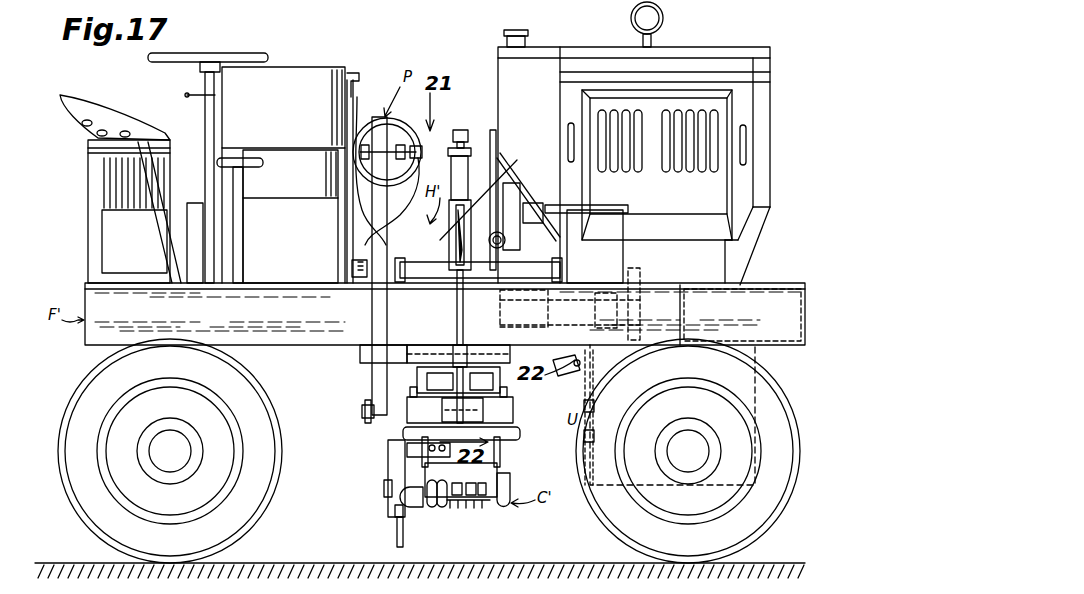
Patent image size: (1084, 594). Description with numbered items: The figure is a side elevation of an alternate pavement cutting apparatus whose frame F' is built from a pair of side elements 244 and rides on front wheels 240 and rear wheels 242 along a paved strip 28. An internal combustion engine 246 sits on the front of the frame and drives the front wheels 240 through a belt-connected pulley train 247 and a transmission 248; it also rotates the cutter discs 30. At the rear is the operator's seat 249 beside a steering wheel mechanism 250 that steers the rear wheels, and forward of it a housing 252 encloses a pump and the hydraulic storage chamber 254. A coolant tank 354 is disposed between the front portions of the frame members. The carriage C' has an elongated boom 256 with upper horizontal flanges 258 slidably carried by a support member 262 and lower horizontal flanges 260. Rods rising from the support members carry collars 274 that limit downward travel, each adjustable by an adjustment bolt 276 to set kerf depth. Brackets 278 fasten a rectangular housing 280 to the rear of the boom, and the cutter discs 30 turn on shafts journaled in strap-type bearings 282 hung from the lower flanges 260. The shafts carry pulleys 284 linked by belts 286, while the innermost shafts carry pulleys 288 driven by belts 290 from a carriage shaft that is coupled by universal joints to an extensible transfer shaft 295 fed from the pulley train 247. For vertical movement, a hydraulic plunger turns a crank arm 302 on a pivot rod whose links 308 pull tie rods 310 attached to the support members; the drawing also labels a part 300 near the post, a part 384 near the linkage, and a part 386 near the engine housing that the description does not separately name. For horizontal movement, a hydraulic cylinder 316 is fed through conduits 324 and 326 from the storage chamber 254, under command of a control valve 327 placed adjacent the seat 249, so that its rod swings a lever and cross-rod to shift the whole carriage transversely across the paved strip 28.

The paved strip 28 is at (247, 562).
The cutter discs 30 is at (400, 536).
The front wheels 240 is at (745, 537).
The rear wheels 242 is at (125, 522).
The side elements 244 is at (100, 333).
The internal combustion engine 246 is at (738, 63).
The belt-connected pulley train 247 is at (630, 300).
The transmission 248 is at (595, 513).
The operator's seat 249 is at (90, 107).
The steering wheel mechanism 250 is at (213, 55).
The housing 252 is at (110, 238).
The hydraulic storage chamber 254 is at (283, 175).
The boom 256 is at (490, 447).
The upper horizontal flanges 258 is at (518, 441).
The lower horizontal flanges 260 is at (505, 475).
The support member 262 is at (410, 418).
The collar 274 is at (470, 150).
The adjustment bolt 276 is at (457, 130).
The brackets 278 is at (408, 450).
The rectangular housing 280 is at (397, 473).
The strap-type bearings 282 is at (505, 510).
The pulleys 284 is at (400, 507).
The belts 286 is at (413, 488).
The pulleys 288 is at (453, 508).
The belts 290 is at (468, 506).
The transfer shaft 295 is at (560, 372).
The vertical post 300 is at (372, 285).
The crank arm 302 is at (507, 180).
The links 308 is at (497, 160).
The tie rod 310 is at (458, 317).
The hydraulic cylinder 316 is at (357, 183).
The conduit 324 is at (358, 100).
The conduit 326 is at (400, 218).
The control valve 327 is at (187, 95).
The tank 354 is at (750, 287).
The pivot 384 is at (508, 262).
The housing block 386 is at (540, 268).